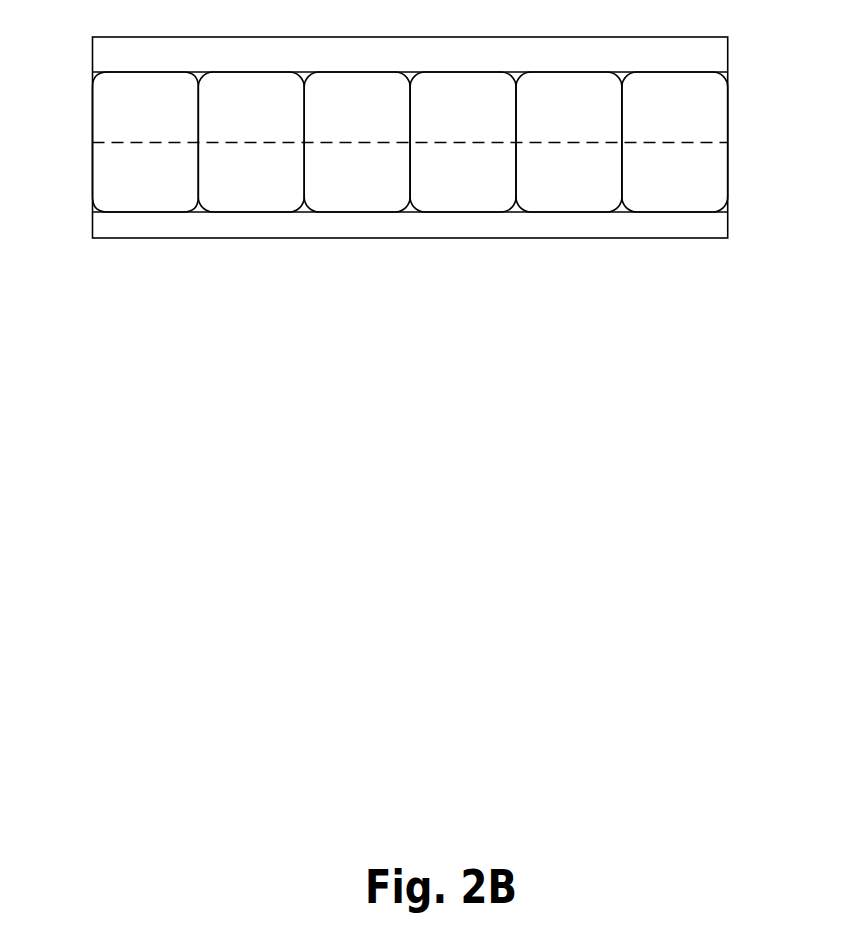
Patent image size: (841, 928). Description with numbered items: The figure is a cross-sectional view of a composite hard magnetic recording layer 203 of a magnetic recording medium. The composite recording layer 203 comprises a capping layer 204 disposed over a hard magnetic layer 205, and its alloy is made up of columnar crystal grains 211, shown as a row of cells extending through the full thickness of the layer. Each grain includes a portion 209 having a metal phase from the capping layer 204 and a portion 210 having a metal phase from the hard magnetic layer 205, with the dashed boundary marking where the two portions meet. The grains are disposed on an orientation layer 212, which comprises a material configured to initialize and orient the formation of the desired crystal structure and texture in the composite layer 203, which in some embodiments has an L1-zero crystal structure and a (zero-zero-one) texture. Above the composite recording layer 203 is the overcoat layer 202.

The overcoat layer 202 is at (728, 43).
The composite recording layer 203 is at (415, 145).
The capping layer 204 is at (102, 110).
The hard magnetic layer 205 is at (102, 180).
The portion of crystal grain having a metal phase from the capping layer 209 is at (146, 107).
The portion of crystal grain having a metal phase from the hard magnetic layer 210 is at (146, 177).
The columnar crystal grains 211 is at (199, 133).
The orientation layer 212 is at (728, 229).